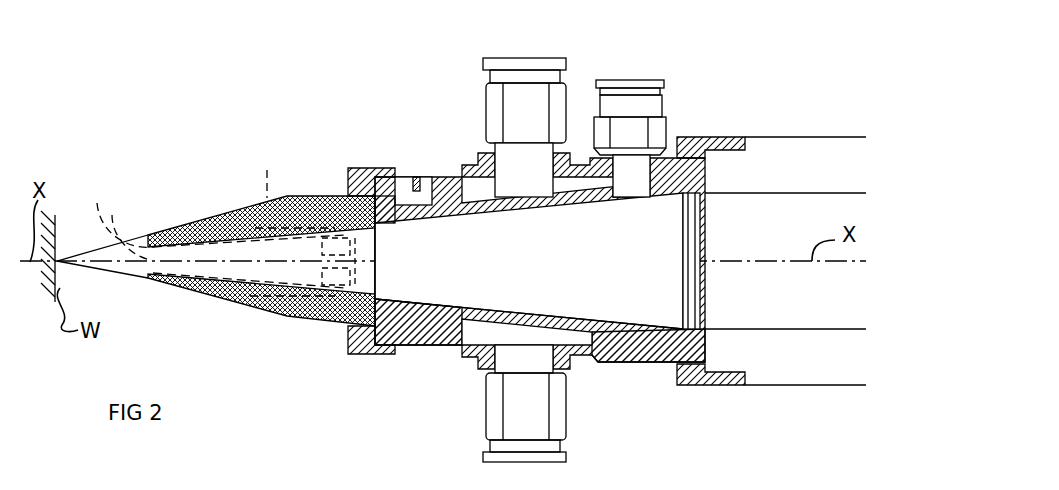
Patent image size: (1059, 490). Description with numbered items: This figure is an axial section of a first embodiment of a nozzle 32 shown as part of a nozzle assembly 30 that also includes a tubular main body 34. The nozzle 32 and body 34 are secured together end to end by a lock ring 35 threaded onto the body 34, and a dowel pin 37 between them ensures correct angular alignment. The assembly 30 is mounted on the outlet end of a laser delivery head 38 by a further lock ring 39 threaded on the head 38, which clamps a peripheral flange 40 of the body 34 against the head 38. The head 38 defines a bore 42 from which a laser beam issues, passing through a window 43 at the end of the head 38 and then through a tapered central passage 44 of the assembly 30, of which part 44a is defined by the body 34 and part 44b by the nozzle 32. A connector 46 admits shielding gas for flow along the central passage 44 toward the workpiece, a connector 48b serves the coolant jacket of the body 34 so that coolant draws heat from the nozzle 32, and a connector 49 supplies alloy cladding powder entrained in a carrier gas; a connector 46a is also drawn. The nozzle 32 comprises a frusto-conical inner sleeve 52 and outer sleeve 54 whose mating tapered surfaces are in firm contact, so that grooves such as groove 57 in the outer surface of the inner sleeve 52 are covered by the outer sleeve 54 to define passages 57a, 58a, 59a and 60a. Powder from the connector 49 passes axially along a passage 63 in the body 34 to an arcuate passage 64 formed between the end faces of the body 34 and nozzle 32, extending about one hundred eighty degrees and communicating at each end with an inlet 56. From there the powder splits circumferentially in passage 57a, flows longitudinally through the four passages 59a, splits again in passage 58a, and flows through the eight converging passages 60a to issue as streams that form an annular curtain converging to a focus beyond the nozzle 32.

The nozzle assembly 30 is at (402, 376).
The nozzle 32 is at (217, 305).
The tubular main body 34 is at (631, 366).
The lock ring 35 is at (365, 356).
The dowel pin 37 is at (413, 346).
The laser delivery head 38 is at (823, 390).
The further lock ring 39 is at (722, 140).
The peripheral flange 40 is at (712, 368).
The bore 42 is at (847, 327).
The window 43 is at (692, 272).
The tapered central passage 44 is at (642, 226).
The part of central passage 44a is at (602, 314).
The part of central passage 44b is at (240, 250).
The connector 46 is at (632, 100).
The fitting 46a is at (520, 100).
The connector 48b is at (520, 402).
The connector 49 is at (422, 195).
The inner sleeve 52 is at (200, 292).
The outer sleeve 54 is at (287, 196).
The inlet 56 is at (380, 276).
The groove 57 is at (392, 486).
The passage 57a is at (273, 186).
The passage 58a is at (294, 272).
The passage 59a is at (322, 330).
The passage 60a is at (125, 222).
The passage 63 is at (405, 202).
The arcuate passage 64 is at (385, 238).